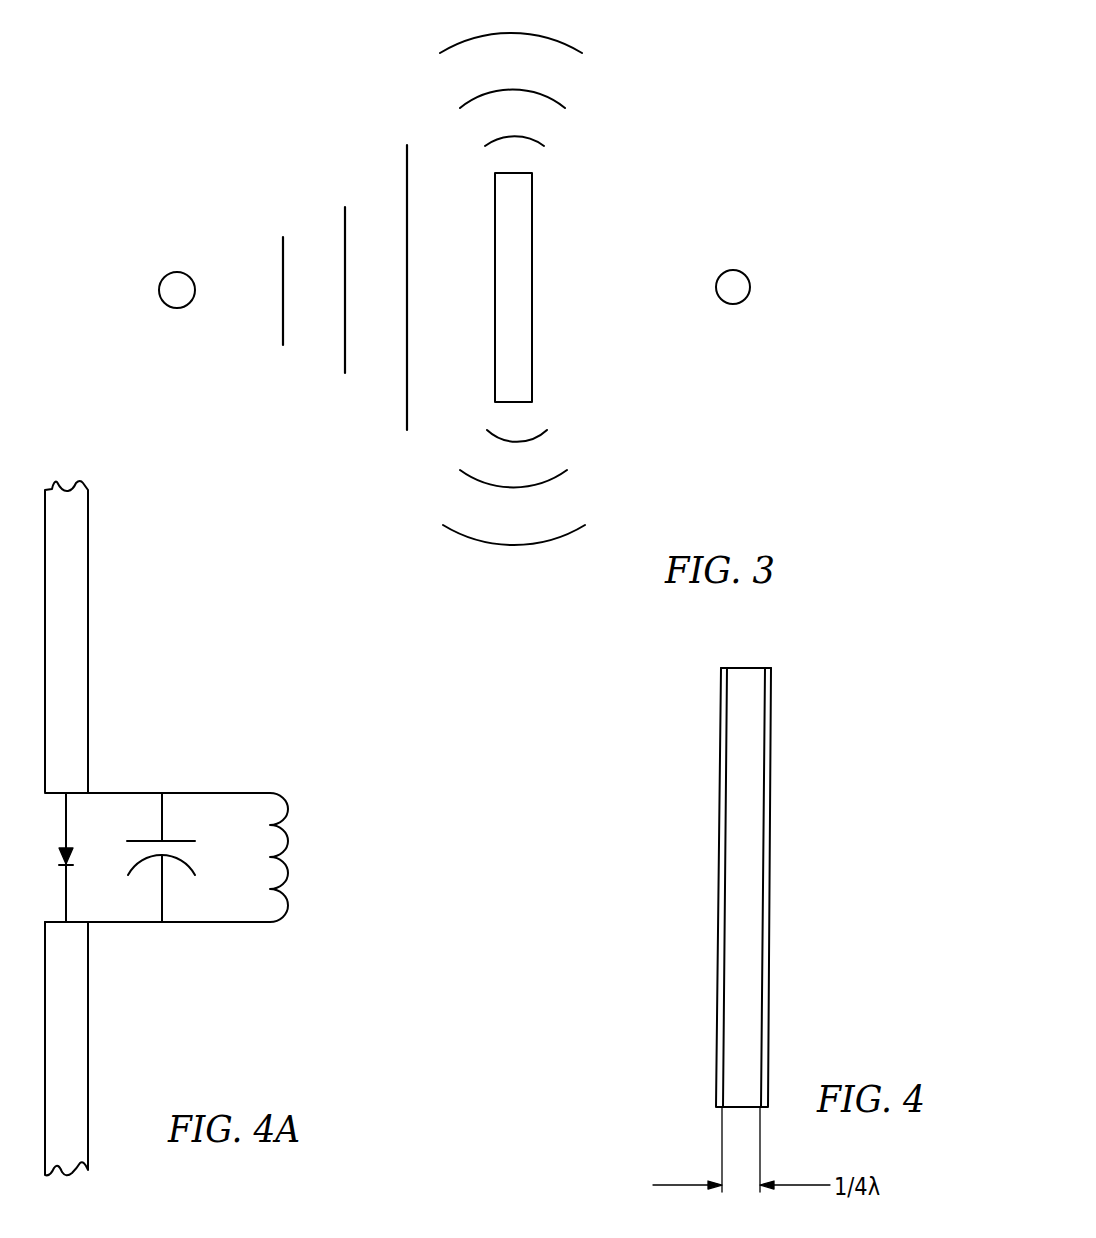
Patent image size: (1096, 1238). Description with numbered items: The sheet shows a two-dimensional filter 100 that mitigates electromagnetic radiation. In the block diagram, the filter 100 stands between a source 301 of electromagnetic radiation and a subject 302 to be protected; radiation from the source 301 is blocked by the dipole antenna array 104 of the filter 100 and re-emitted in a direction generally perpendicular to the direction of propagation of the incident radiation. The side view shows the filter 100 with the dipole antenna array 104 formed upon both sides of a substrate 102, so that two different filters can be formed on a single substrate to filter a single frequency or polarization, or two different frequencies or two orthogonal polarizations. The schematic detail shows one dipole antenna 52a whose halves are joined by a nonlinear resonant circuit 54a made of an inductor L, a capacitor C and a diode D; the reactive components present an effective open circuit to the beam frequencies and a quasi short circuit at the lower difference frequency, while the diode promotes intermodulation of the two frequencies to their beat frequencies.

In FIG. 3, the filter 100 is at (532, 351).
In FIG. 4, the filter 100 is at (675, 860).
In FIG. 4, the substrate 102 is at (744, 668).
In FIG. 4, the dipole antenna array 104 is at (719, 778).
In FIG. 3, the source 301 is at (177, 308).
In FIG. 3, the subject 302 is at (733, 304).
In FIG. 4A, the dipole antenna 52a is at (88, 641).
In FIG. 4A, the nonlinear resonant circuit 54a is at (254, 741).